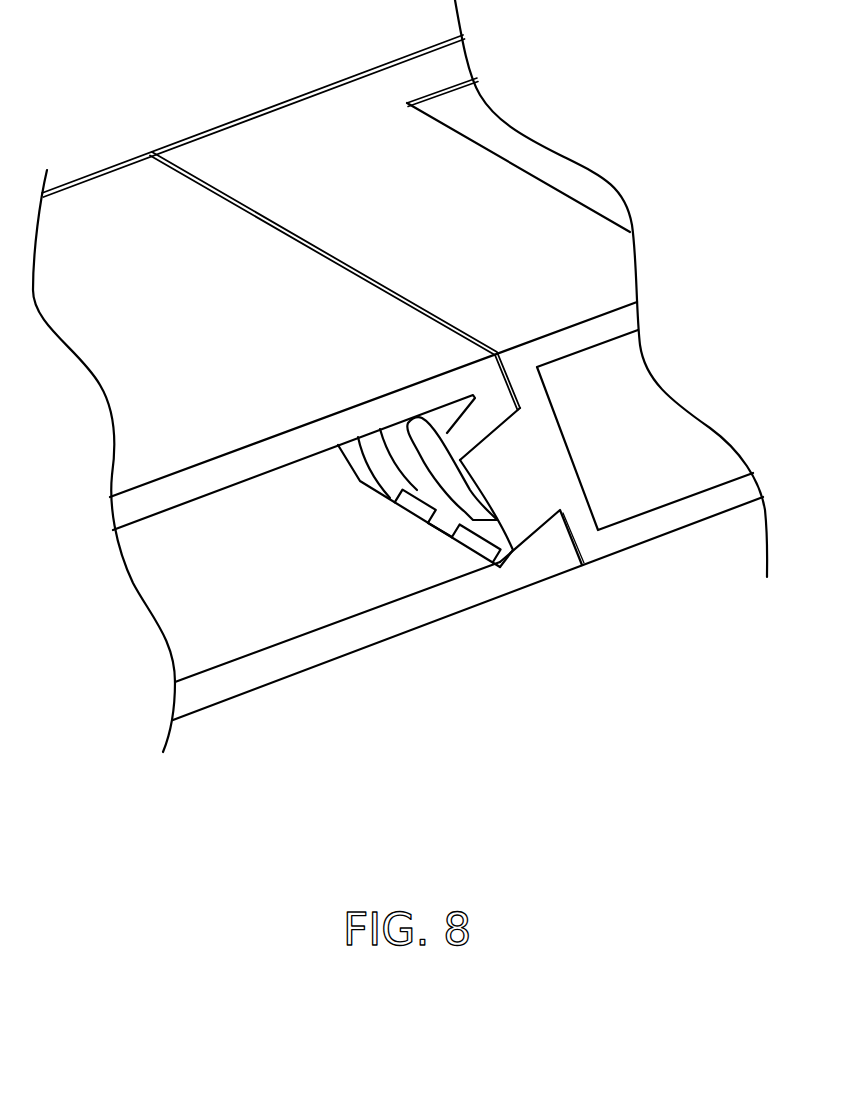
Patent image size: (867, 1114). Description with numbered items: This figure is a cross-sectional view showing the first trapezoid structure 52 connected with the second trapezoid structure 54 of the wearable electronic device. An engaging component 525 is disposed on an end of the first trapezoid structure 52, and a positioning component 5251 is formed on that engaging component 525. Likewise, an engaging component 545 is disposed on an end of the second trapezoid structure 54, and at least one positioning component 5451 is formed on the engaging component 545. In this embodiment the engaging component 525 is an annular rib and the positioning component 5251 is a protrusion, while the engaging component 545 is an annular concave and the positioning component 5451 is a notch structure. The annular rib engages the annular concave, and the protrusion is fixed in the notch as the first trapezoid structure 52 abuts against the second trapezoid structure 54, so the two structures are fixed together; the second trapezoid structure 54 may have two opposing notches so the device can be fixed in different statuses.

The first trapezoid structure 52 is at (262, 92).
The second trapezoid structure 54 is at (111, 149).
The engaging component 525 is at (530, 498).
The positioning component 5251 is at (443, 514).
The engaging component 545 is at (363, 482).
The positioning component 5451 is at (422, 513).